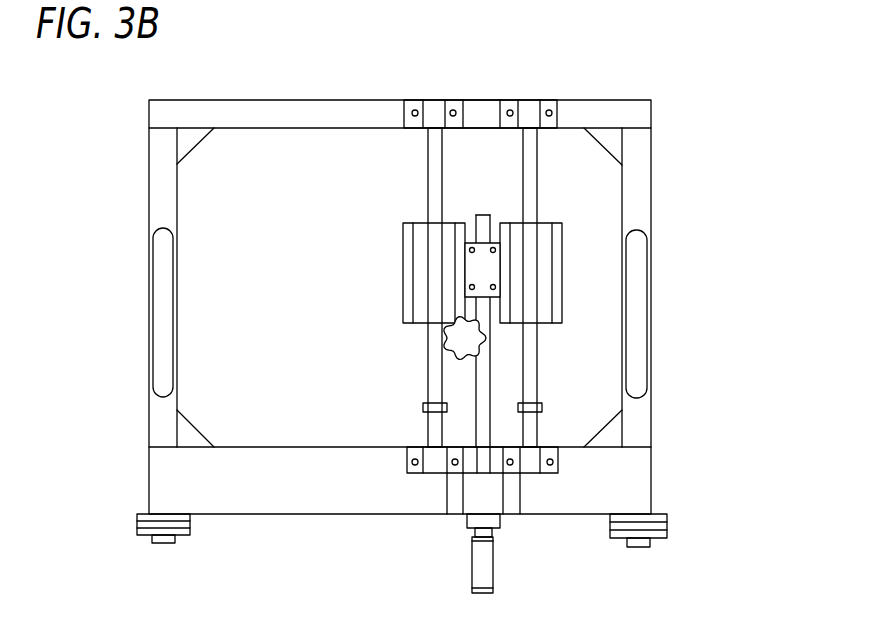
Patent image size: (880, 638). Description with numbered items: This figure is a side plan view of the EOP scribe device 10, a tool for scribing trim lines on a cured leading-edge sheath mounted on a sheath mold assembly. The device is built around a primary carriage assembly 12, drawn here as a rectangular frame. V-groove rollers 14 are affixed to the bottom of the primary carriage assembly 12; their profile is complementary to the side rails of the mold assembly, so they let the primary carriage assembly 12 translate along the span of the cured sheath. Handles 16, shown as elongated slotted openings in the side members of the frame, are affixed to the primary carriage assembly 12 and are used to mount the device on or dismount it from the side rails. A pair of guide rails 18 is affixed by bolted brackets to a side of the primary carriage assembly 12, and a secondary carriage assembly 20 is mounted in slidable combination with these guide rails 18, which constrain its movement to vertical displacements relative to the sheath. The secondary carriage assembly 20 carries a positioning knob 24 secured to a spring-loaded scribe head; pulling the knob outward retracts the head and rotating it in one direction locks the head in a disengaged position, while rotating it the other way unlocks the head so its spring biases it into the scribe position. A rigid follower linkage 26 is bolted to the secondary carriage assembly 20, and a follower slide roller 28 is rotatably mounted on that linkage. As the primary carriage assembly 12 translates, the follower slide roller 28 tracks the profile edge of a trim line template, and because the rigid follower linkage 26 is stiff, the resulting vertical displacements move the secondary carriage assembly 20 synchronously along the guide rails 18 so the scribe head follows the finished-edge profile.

The EOP scribe device 10 is at (740, 87).
The primary carriage assembly 12 is at (656, 182).
The V-groove rollers 14 is at (131, 531).
The handles 16 is at (158, 322).
The guide rails 18 is at (522, 158).
The secondary carriage assembly 20 is at (423, 299).
The positioning knob 24 is at (461, 346).
The rigid follower linkage 26 is at (493, 432).
The follower slide roller 28 is at (472, 563).